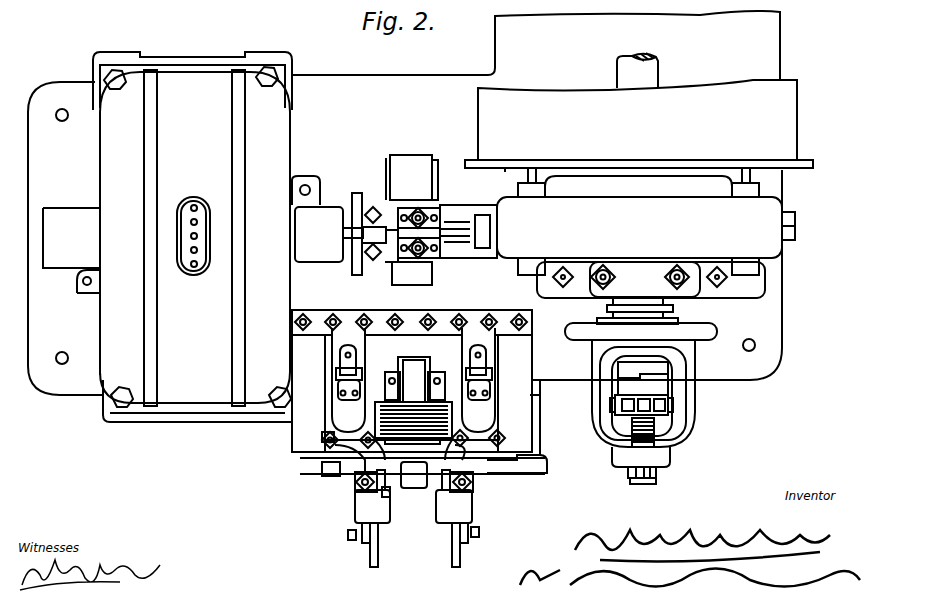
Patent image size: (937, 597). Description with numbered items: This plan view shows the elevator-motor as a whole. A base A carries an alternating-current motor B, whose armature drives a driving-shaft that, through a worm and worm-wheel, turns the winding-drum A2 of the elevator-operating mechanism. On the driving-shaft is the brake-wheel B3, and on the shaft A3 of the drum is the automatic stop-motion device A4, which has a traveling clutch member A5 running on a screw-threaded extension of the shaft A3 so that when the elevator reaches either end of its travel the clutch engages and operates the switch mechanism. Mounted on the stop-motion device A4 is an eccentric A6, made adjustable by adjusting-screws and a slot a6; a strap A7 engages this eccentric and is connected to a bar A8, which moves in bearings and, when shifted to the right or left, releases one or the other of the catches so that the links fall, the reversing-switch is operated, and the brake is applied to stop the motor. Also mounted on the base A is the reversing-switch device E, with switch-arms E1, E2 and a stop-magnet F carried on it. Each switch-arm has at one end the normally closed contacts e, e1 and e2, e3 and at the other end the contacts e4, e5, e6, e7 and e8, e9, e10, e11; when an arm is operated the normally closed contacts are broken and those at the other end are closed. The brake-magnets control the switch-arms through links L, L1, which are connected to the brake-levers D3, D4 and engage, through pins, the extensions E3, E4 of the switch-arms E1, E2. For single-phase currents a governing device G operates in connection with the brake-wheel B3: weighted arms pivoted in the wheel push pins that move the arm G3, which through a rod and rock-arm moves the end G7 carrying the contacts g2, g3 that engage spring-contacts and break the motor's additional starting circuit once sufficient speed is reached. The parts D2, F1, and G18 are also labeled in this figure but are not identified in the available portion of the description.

The base A is at (405, 203).
The winding-drum A2 is at (639, 124).
The shaft of the drum A3 is at (688, 466).
The automatic stop-motion device A4 is at (690, 432).
The traveling clutch member A5 is at (672, 404).
The eccentric A6 is at (668, 478).
The slot a6 is at (640, 480).
The strap A7 is at (641, 320).
The bar A8 is at (315, 478).
The alternating-current motor B is at (192, 237).
The brake-wheel B3 is at (436, 160).
The block D2 is at (409, 177).
The brake-lever D3 is at (365, 559).
The brake-lever D4 is at (465, 559).
The reversing-switch device E is at (292, 430).
The switch-arm E1 is at (311, 393).
The switch-arm E2 is at (508, 393).
The extension of switch-arm E3 is at (365, 458).
The extension of switch-arm E4 is at (472, 460).
The contact e is at (324, 448).
The contact e1 is at (360, 432).
The contact e2 is at (497, 430).
The contact e3 is at (514, 437).
The contact e4 is at (304, 309).
The contact e5 is at (334, 309).
The contact e6 is at (364, 309).
The contact e7 is at (395, 309).
The contact e8 is at (432, 309).
The contact e9 is at (461, 309).
The contact e10 is at (492, 309).
The contact e11 is at (521, 309).
The stop-magnet F is at (450, 430).
The armature box F1 is at (414, 475).
The governing device G is at (412, 274).
The arm G3 is at (329, 234).
The end of rock-arm G7 is at (458, 232).
The bar G18 is at (393, 208).
The contact g2 is at (440, 258).
The contact g3 is at (427, 205).
The link L is at (386, 490).
The link L1 is at (445, 490).